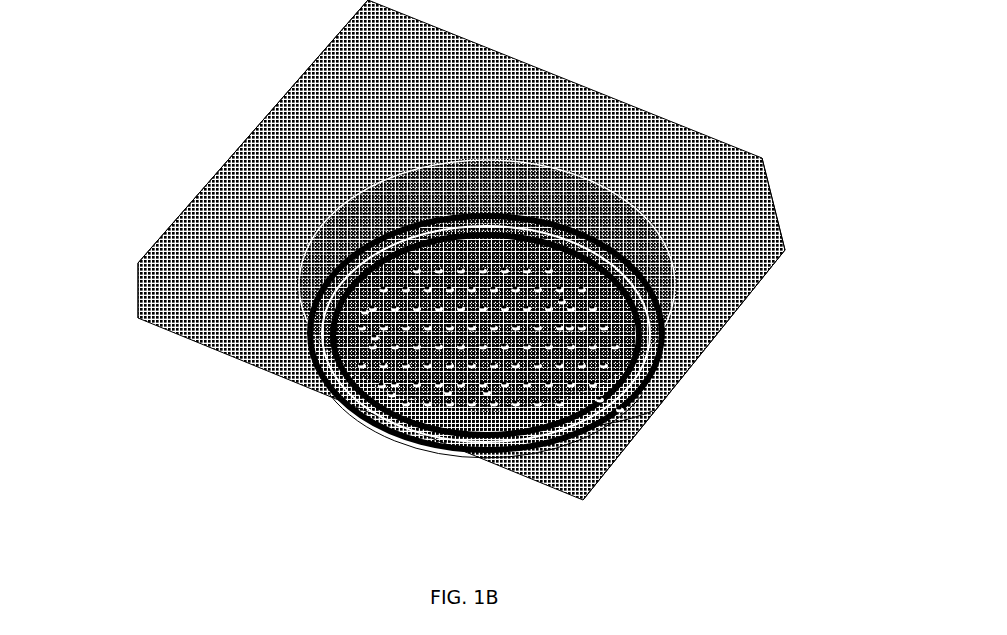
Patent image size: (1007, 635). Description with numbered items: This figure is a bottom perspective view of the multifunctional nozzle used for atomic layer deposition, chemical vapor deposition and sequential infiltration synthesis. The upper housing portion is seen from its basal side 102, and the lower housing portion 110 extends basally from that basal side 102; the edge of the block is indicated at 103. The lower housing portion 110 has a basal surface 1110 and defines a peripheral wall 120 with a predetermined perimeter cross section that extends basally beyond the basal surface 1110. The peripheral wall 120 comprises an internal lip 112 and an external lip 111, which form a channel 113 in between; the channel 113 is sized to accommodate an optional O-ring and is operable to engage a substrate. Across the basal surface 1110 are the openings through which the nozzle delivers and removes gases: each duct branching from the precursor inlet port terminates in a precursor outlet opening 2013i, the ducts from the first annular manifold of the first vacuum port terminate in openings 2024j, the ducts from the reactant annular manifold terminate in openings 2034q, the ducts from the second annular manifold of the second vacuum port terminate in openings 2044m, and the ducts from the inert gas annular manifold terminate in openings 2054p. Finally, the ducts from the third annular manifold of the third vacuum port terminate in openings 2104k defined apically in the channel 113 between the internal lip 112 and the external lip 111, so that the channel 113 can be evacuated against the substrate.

The basal side 102 is at (340, 127).
The substrate edge 103 is at (347, 52).
The lower housing portion 110 is at (327, 260).
The external lip 111 is at (490, 217).
The internal lip 112 is at (607, 275).
The channel 113 is at (400, 423).
The peripheral wall 120 is at (600, 219).
The basal surface 1110 is at (417, 402).
The precursor outlet opening 2013i is at (620, 410).
The opening 2024j is at (392, 395).
The opening 2034q is at (487, 393).
The opening 2044m is at (375, 338).
The opening 2054p is at (570, 328).
The opening 2104k is at (600, 430).